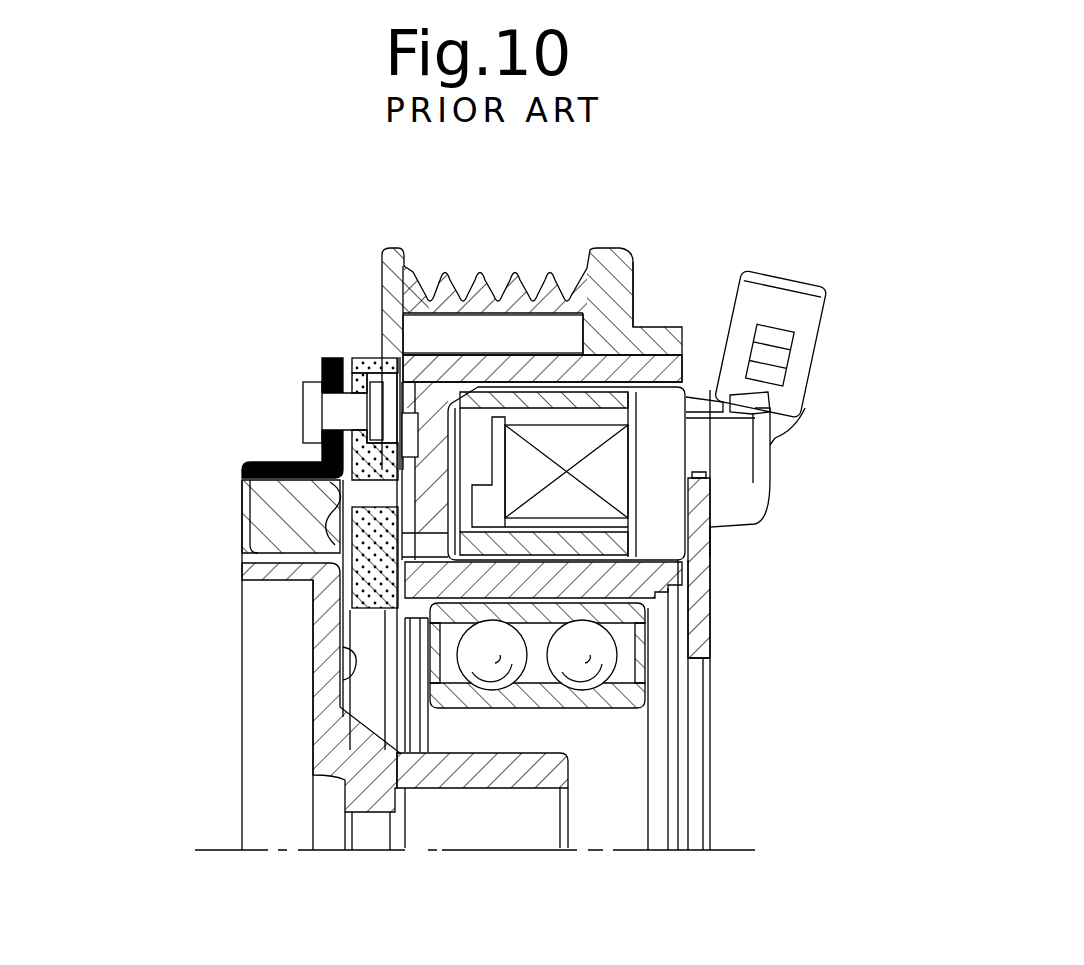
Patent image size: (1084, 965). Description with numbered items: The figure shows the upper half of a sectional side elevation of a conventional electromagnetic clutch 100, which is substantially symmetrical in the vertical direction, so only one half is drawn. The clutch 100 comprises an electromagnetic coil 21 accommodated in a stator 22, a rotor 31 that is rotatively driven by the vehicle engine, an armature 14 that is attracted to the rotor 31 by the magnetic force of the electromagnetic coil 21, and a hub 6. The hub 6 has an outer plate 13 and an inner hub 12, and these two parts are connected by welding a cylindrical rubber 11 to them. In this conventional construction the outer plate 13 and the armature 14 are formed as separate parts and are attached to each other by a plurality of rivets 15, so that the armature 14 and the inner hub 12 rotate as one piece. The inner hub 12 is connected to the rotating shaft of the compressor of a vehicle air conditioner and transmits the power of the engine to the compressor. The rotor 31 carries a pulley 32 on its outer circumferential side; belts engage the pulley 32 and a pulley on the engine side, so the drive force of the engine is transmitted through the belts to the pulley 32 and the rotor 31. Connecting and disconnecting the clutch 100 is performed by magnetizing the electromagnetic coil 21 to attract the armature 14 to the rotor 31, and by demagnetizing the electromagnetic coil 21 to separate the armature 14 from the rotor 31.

The electromagnetic clutch 100 is at (776, 192).
The hub 6 is at (196, 615).
The cylindrical rubber 11 is at (290, 525).
The inner hub 12 is at (335, 760).
The outer plate 13 is at (282, 466).
The armature 14 is at (377, 360).
The rivets 15 is at (308, 398).
The electromagnetic coil 21 is at (612, 468).
The stator 22 is at (625, 540).
The rotor 31 is at (462, 368).
The pulley 32 is at (615, 268).